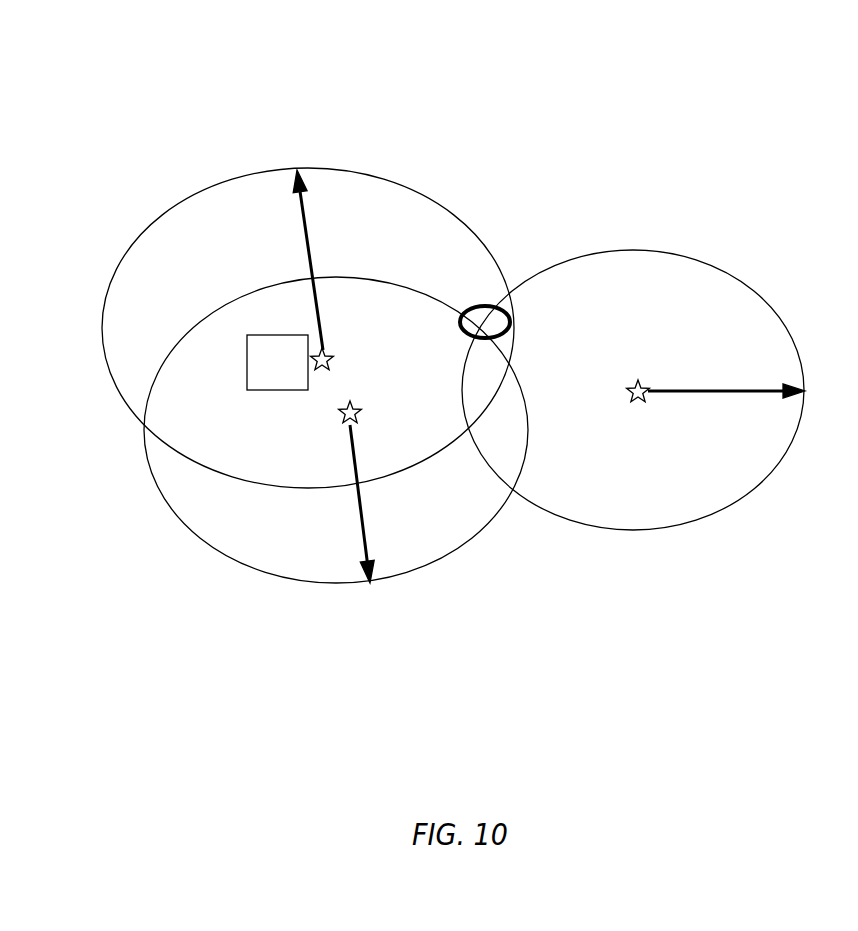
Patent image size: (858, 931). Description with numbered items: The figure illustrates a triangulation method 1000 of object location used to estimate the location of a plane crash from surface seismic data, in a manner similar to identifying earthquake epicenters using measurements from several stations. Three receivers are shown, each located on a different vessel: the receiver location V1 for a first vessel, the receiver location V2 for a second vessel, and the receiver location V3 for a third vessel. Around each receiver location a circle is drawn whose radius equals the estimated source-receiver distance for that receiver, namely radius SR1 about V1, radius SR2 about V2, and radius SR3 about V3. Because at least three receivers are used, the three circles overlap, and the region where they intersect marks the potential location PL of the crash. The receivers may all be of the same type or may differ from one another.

The triangulation method 1000 is at (434, 771).
The location of the receiver for a first vessel V1 is at (337, 420).
The location of the receiver for a second vessel V2 is at (290, 362).
The location of the receiver for a third vessel V3 is at (652, 382).
The source-receiver distance for the first vessel SR1 is at (381, 504).
The source-receiver distance for the second vessel SR2 is at (333, 260).
The source-receiver distance for the third vessel SR3 is at (726, 380).
The potential location of the crash PL is at (505, 284).